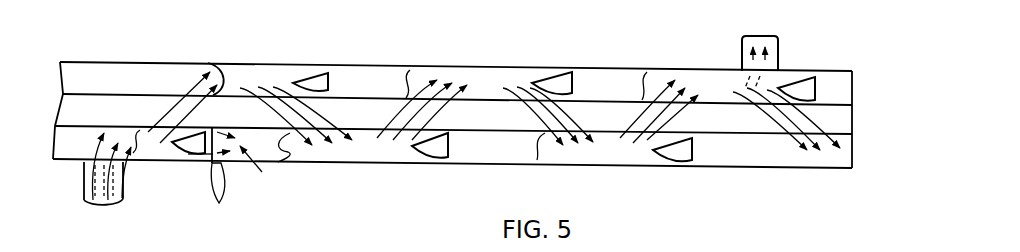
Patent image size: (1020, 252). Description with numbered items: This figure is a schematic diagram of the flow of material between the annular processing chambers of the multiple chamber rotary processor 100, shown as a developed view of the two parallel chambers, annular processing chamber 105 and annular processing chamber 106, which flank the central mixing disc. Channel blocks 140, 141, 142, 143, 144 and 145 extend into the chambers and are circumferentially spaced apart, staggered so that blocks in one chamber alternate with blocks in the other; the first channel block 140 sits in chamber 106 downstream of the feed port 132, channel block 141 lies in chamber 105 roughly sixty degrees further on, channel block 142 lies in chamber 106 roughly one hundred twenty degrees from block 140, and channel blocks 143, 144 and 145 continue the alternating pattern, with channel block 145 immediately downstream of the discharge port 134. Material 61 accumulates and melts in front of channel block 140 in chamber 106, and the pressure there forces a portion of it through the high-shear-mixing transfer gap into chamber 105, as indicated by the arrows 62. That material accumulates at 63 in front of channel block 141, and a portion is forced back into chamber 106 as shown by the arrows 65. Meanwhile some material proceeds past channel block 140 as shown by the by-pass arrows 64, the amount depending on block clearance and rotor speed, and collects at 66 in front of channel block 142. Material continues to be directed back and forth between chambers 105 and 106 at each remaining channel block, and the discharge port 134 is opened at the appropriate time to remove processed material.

The multiple chamber rotary processor 100 is at (120, 33).
The material 61 is at (158, 153).
The arrows 62 is at (180, 92).
The material 63 is at (247, 72).
The by-pass arrows 64 is at (219, 203).
The arrows 65 is at (322, 137).
The material 66 is at (288, 158).
The annular processing chamber 105 is at (353, 83).
The annular processing chamber 106 is at (262, 172).
The feed port 132 is at (113, 203).
The discharge port 134 is at (742, 43).
The first channel block 140 is at (192, 150).
The channel block 141 is at (310, 80).
The channel block 142 is at (443, 157).
The channel block 143 is at (557, 80).
The channel block 144 is at (680, 153).
The channel block 145 is at (800, 77).